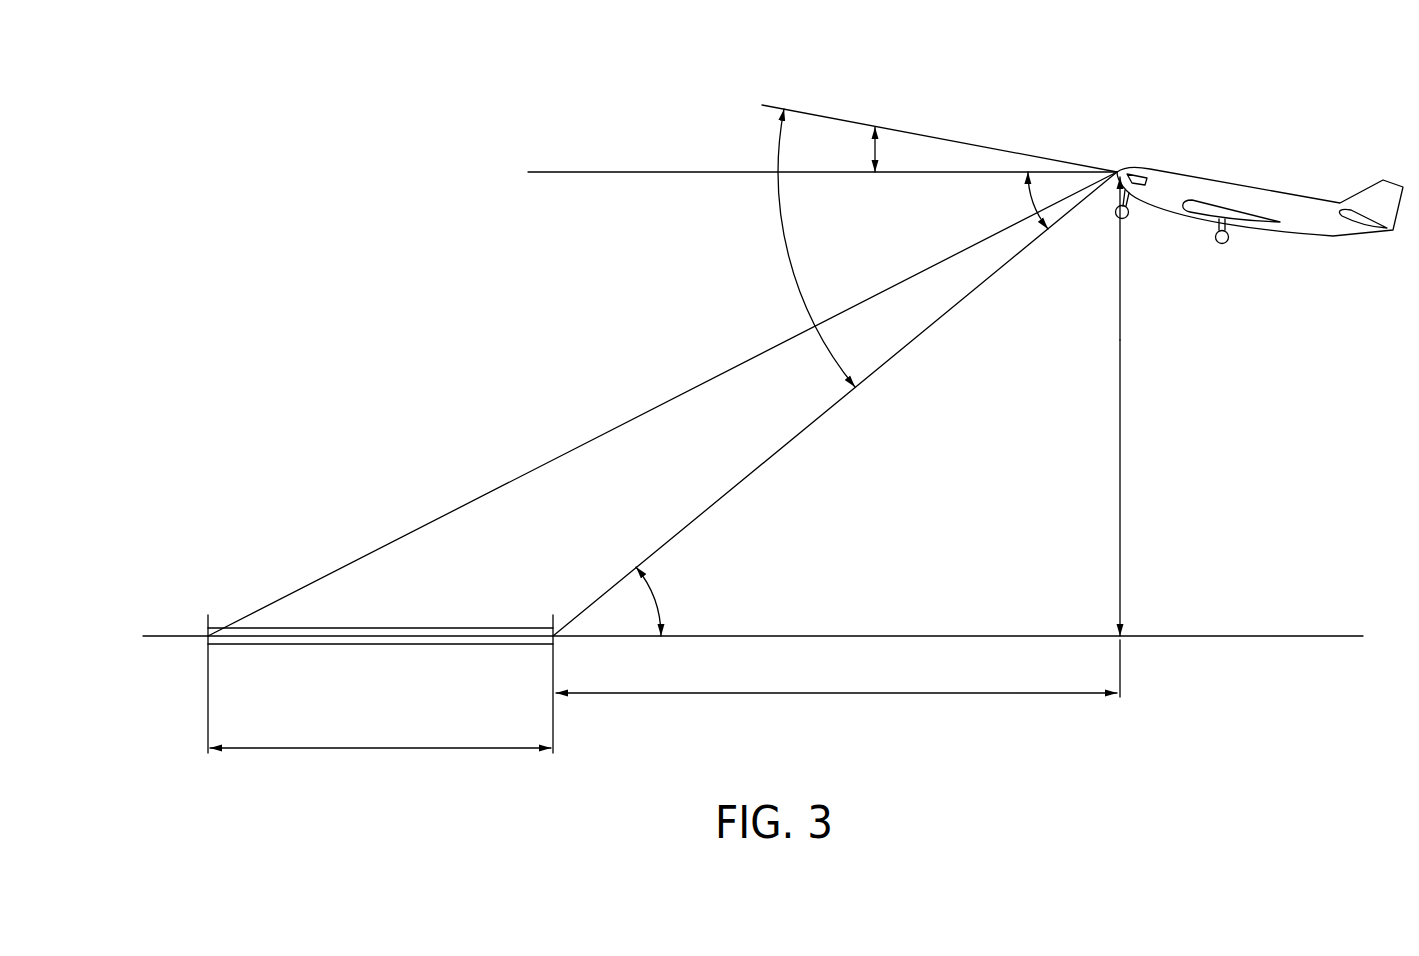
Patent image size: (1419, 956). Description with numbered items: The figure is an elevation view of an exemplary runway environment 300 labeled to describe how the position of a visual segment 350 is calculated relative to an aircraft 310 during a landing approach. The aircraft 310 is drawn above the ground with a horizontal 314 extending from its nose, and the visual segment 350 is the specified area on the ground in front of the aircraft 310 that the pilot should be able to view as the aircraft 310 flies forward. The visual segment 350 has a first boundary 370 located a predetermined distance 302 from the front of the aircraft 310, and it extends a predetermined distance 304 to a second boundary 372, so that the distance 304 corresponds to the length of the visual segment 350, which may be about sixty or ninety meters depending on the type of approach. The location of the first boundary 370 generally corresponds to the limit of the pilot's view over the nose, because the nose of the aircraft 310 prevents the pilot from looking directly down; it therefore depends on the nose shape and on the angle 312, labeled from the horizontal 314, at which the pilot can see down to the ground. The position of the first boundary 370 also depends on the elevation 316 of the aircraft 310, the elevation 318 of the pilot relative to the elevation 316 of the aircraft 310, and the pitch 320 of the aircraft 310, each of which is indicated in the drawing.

The runway environment 300 is at (315, 98).
The aircraft 310 is at (1243, 182).
The angle 312 is at (1030, 203).
The horizontal 314 is at (553, 175).
The elevation of the aircraft 316 is at (1120, 410).
The elevation of the pilot 318 is at (1120, 276).
The pitch 320 is at (875, 147).
The visual segment 350 is at (325, 616).
The first boundary 370 is at (558, 636).
The second boundary 372 is at (208, 637).
The predetermined distance 302 is at (832, 694).
The predetermined distance 304 is at (382, 752).